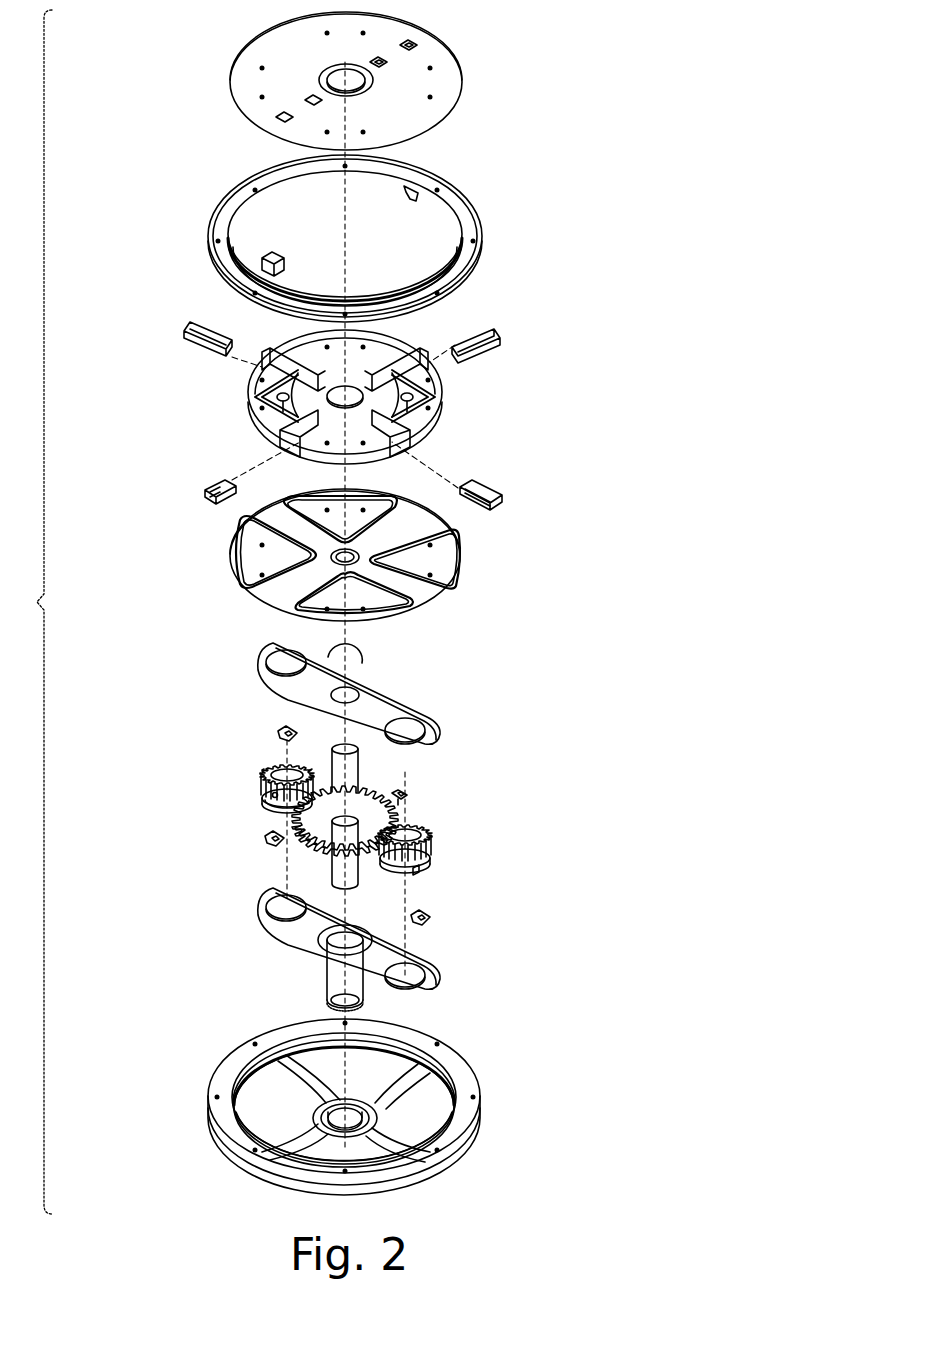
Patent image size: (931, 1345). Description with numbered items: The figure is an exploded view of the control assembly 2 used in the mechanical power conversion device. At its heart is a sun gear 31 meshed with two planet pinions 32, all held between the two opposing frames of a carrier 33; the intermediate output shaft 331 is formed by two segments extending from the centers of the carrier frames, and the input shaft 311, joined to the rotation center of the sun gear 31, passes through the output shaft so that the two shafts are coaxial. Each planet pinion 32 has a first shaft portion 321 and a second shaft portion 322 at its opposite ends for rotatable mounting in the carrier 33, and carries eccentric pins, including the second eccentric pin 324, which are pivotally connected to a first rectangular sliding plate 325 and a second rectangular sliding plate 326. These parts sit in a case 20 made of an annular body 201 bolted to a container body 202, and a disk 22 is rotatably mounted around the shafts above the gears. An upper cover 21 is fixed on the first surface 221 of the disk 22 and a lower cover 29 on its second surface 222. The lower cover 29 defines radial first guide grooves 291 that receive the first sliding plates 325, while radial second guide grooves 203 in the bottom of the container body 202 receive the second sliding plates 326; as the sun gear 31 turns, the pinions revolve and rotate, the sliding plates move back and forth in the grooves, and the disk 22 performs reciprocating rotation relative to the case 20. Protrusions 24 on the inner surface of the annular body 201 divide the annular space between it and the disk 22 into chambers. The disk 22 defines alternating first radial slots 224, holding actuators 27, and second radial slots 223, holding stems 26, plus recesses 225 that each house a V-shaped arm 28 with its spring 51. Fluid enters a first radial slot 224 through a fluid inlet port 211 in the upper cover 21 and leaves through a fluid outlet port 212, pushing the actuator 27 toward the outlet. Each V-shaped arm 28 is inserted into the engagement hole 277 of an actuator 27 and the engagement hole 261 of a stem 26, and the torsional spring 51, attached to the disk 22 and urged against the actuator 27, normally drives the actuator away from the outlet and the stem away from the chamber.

The control assembly 2 is at (34, 612).
The case 20 is at (490, 1134).
The annular body 201 is at (303, 172).
The container body 202 is at (466, 1080).
The second guide grooves 203 is at (393, 1088).
The upper cover 21 is at (246, 72).
The fluid inlet ports 211 is at (415, 52).
The fluid outlet ports 212 is at (382, 68).
The disk 22 is at (256, 327).
The first surface 221 is at (415, 338).
The second surface 222 is at (448, 403).
The second radial slots 223 is at (410, 447).
The first radial slots 224 is at (266, 443).
The recesses 225 is at (268, 372).
The protrusions 24 is at (281, 268).
The stems 26 is at (494, 500).
The engagement hole 261 is at (476, 488).
The actuators 27 is at (203, 484).
The engagement hole 277 is at (222, 498).
The V-shaped arms 28 is at (253, 407).
The lower cover 29 is at (250, 559).
The first guide grooves 291 is at (393, 585).
The sun gear 31 is at (393, 825).
The input shaft 311 is at (352, 766).
The planet pinions 32 is at (246, 778).
The first shaft portion 321 is at (277, 767).
The second shaft portion 322 is at (275, 803).
The second eccentric pin 324 is at (278, 794).
The first rectangular sliding plate 325 is at (283, 729).
The second rectangular sliding plate 326 is at (272, 842).
The carrier 33 is at (390, 692).
The intermediate output shaft 331 is at (337, 978).
The spring 51 is at (253, 418).